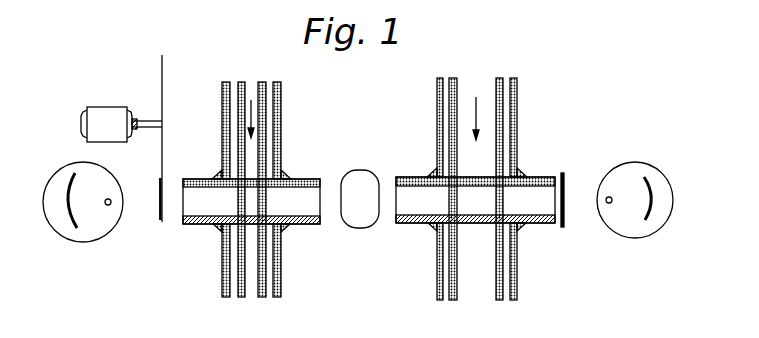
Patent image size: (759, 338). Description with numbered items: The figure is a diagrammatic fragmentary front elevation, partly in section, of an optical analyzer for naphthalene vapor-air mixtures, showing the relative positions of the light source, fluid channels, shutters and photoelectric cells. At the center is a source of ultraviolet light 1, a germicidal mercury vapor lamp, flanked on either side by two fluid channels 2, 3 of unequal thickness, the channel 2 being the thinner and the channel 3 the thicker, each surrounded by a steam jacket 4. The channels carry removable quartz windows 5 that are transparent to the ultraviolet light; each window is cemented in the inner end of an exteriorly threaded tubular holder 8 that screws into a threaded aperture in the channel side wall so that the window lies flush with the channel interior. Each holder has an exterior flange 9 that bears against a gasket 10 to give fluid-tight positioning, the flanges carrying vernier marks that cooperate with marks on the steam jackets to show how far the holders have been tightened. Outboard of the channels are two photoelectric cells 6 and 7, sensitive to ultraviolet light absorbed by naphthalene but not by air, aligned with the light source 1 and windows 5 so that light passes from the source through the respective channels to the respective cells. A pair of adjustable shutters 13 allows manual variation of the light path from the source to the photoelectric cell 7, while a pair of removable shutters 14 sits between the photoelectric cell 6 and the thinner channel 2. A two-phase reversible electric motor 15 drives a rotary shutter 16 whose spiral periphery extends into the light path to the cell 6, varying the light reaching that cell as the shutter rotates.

The source of ultraviolet light 1 is at (365, 176).
The fluid channel 2 is at (245, 265).
The fluid channel 3 is at (492, 280).
The steam jacket 4 is at (268, 145).
The window 5 is at (232, 203).
The photoelectric cell 6 is at (55, 226).
The photoelectric cell 7 is at (650, 236).
The tubular holder 8 is at (203, 226).
The exterior flange 9 is at (218, 179).
The gasket 10 is at (222, 177).
The adjustable shutter 13 is at (563, 182).
The removable shutter 14 is at (157, 222).
The two-phase reversible electric motor 15 is at (108, 107).
The rotary shutter 16 is at (162, 72).